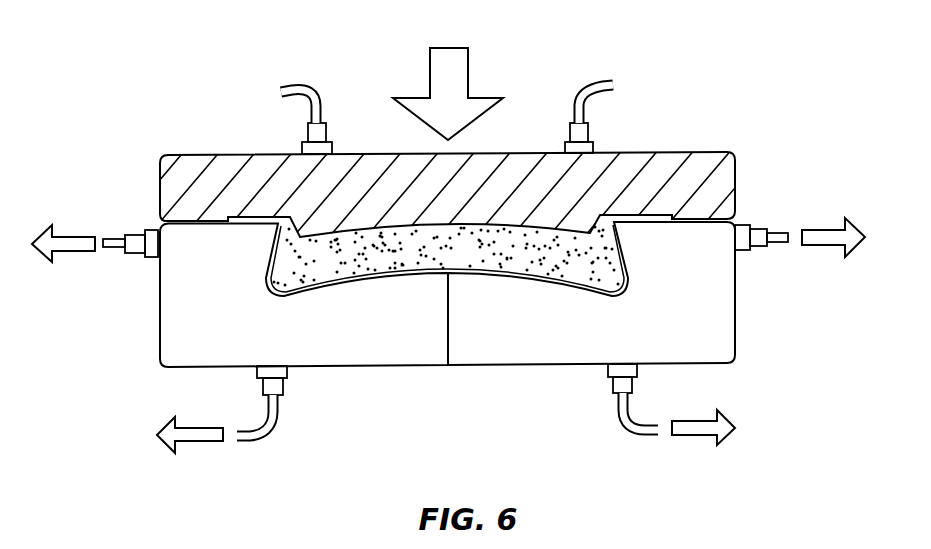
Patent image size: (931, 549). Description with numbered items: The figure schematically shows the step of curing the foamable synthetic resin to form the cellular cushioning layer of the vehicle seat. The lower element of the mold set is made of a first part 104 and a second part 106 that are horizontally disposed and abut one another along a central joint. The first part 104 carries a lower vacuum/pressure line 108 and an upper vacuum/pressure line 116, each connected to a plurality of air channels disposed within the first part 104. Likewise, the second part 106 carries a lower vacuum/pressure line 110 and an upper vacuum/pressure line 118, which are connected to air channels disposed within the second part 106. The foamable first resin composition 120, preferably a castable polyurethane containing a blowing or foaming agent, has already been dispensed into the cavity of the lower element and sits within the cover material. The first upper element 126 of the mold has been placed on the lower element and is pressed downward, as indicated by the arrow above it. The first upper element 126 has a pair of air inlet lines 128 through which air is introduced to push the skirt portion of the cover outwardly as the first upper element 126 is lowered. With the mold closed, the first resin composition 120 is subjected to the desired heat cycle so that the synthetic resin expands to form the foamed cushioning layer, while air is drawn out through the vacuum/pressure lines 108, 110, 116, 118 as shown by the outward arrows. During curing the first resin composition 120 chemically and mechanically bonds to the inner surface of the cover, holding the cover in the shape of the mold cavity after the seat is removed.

The first part 104 is at (385, 333).
The second part 106 is at (562, 340).
The lower vacuum/pressure line 108 is at (280, 426).
The lower vacuum/pressure line 110 is at (645, 433).
The upper vacuum/pressure line 116 is at (115, 240).
The upper vacuum/pressure line 118 is at (777, 232).
The first resin composition 120 is at (542, 247).
The first upper element 126 is at (695, 166).
The air inlet lines 128 is at (301, 84).